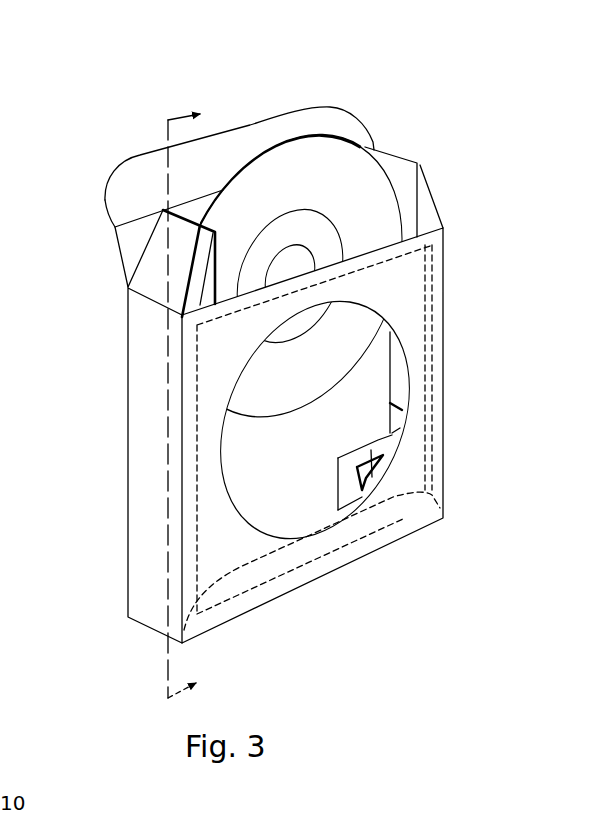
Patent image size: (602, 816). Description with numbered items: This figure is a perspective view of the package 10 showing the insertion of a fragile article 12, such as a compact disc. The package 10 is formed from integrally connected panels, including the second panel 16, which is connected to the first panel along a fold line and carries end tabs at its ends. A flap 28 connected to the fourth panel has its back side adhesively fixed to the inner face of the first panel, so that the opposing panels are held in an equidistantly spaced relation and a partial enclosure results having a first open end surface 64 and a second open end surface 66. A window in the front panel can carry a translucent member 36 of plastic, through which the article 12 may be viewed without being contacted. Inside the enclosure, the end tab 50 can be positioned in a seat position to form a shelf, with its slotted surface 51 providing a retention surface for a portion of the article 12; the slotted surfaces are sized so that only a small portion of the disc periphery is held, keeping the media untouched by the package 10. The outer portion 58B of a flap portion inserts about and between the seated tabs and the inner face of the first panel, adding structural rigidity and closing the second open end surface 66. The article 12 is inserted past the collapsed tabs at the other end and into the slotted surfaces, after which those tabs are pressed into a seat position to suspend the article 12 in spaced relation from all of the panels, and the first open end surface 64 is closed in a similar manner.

The package 10 is at (132, 676).
The fragile article 12 is at (237, 193).
The second panel 16 is at (302, 580).
The flap 28 is at (427, 300).
The translucent member 36 is at (377, 380).
The end tab 50 is at (395, 411).
The slotted surface 51 is at (360, 458).
The outer portion 58B is at (240, 567).
The first open end surface 64 is at (382, 133).
The second open end surface 66 is at (293, 521).